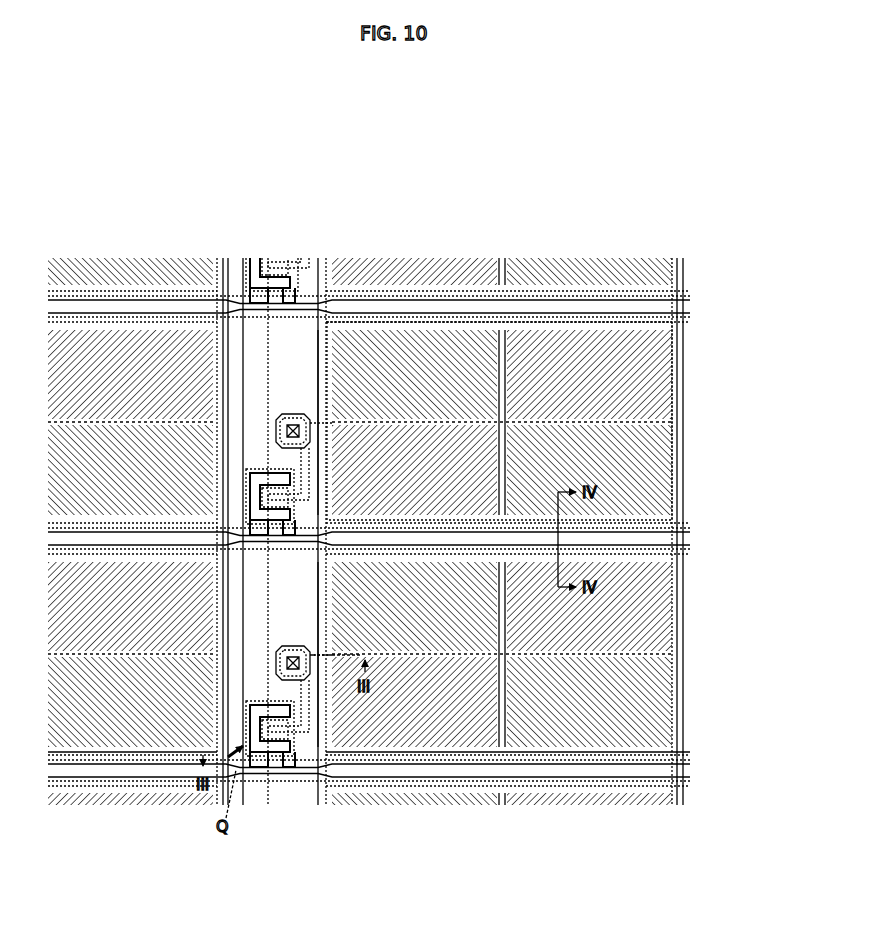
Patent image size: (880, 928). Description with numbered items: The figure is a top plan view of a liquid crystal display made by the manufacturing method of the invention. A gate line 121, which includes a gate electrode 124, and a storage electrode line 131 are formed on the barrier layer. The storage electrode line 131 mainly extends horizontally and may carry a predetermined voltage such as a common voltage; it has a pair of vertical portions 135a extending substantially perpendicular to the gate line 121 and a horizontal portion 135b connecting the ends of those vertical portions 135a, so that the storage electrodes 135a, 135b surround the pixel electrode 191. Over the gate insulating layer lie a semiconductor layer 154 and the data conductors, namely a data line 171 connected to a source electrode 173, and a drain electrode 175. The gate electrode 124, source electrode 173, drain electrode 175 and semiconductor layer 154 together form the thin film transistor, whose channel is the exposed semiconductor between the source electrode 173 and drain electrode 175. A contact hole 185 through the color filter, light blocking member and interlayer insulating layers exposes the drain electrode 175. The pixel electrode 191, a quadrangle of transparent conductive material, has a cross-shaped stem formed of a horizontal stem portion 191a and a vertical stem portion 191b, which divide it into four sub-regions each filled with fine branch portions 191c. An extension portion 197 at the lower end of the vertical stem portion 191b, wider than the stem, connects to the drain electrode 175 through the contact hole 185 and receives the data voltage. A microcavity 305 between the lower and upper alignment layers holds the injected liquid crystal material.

The gate line 121 is at (247, 790).
The gate electrode 124 is at (268, 790).
The storage electrode line 131 is at (330, 790).
The vertical portions 135a is at (452, 764).
The horizontal portion 135b is at (685, 672).
The semiconductor layer 154 is at (270, 703).
The data line 171 is at (476, 768).
The source electrode 173 is at (238, 768).
The drain electrode 175 is at (302, 790).
The contact hole 185 is at (288, 648).
The pixel electrode 191 is at (91, 890).
The horizontal stem portion 191a is at (503, 700).
The vertical stem portion 191b is at (606, 660).
The fine branch portions 191c is at (412, 742).
The extension portion 197 is at (302, 642).
The microcavity 305 is at (327, 373).